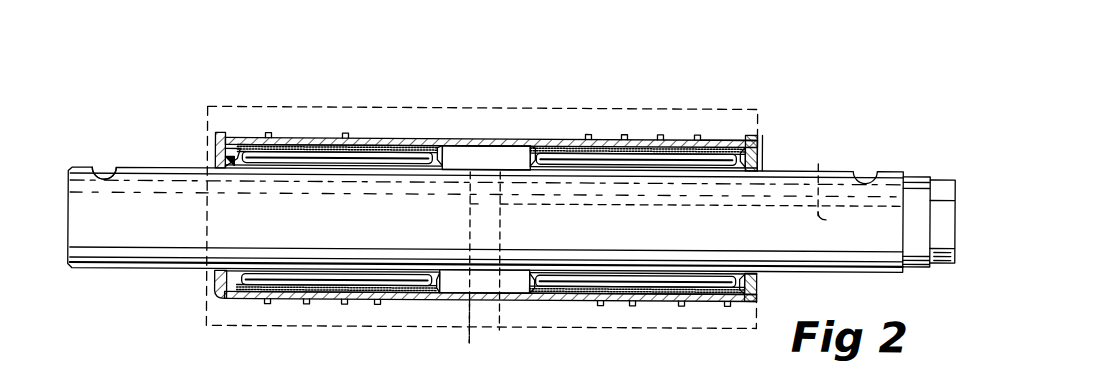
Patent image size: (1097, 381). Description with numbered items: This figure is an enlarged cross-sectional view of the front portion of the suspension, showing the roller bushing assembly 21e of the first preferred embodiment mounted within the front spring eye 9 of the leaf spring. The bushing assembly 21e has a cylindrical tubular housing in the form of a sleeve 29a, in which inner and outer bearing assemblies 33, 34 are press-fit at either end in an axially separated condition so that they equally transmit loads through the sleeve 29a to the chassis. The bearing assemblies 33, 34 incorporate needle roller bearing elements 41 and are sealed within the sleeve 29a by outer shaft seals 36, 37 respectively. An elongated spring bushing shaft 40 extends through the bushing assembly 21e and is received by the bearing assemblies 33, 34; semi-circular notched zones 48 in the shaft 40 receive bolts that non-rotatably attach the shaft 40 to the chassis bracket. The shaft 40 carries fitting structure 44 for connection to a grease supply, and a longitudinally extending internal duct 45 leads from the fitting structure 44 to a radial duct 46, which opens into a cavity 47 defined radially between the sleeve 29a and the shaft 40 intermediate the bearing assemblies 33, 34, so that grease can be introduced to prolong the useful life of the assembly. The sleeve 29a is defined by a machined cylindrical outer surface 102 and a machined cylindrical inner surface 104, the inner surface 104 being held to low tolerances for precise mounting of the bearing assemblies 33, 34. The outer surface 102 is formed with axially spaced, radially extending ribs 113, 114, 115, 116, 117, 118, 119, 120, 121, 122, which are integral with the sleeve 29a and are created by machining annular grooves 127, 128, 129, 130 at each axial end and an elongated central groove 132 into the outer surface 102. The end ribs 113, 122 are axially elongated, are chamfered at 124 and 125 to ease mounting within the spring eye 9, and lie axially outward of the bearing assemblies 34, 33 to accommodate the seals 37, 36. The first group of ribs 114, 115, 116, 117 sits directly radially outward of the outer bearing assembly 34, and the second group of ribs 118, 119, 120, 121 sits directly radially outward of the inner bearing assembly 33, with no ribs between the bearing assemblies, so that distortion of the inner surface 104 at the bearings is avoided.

The front spring eye 9 is at (212, 106).
The roller bushing assembly 21e is at (765, 140).
The sleeve 29a is at (448, 126).
The inner bearing assembly 33 is at (242, 126).
The outer bearing assembly 34 is at (720, 126).
The outer shaft seal 36 is at (224, 156).
The outer shaft seal 37 is at (753, 286).
The spring bushing shaft 40 is at (160, 271).
The needle roller bearing elements 41 is at (272, 283).
The fitting structure 44 is at (945, 180).
The internal duct 45 is at (820, 181).
The radial duct 46 is at (459, 332).
The cavity 47 is at (473, 152).
The semi-circular notched zones 48 is at (110, 175).
The outer surface 102 is at (503, 146).
The inner surface 104 is at (500, 326).
The rib 113 is at (750, 137).
The rib 114 is at (697, 137).
The rib 115 is at (660, 137).
The rib 116 is at (622, 137).
The rib 117 is at (588, 137).
The rib 118 is at (378, 300).
The rib 119 is at (345, 136).
The rib 120 is at (307, 300).
The rib 121 is at (268, 136).
The rib 122 is at (225, 300).
The chamfer 124 is at (757, 142).
The chamfer 125 is at (217, 136).
The annular groove 127 is at (728, 300).
The annular groove 128 is at (682, 300).
The annular groove 129 is at (633, 300).
The annular groove 130 is at (601, 300).
The central groove 132 is at (460, 300).